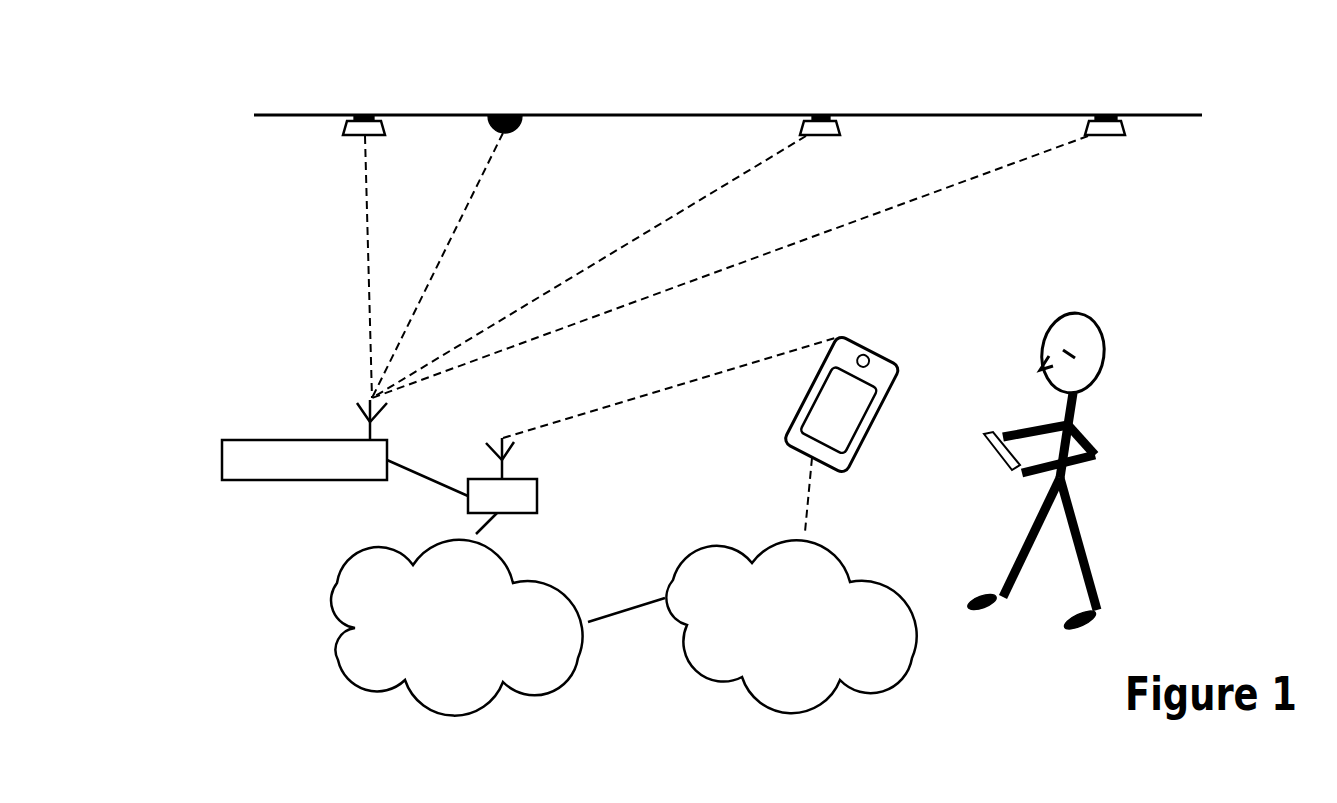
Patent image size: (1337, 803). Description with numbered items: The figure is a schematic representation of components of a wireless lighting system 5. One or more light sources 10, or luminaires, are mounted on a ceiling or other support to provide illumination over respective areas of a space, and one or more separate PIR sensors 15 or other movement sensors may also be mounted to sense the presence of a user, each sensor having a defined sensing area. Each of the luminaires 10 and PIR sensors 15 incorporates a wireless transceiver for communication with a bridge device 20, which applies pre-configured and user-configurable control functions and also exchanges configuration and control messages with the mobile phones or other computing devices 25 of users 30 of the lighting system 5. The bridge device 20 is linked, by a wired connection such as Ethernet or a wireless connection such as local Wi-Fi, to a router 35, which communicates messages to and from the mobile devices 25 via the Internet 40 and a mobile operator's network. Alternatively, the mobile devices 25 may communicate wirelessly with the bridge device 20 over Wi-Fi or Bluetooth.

The wireless lighting system 5 is at (271, 291).
The light sources 10 is at (343, 126).
The PIR sensors 15 is at (505, 110).
The bridge device 20 is at (288, 440).
The mobile phones or other computing devices 25 is at (876, 425).
The users 30 is at (1107, 360).
The router 35 is at (537, 495).
The Internet 40 is at (337, 585).